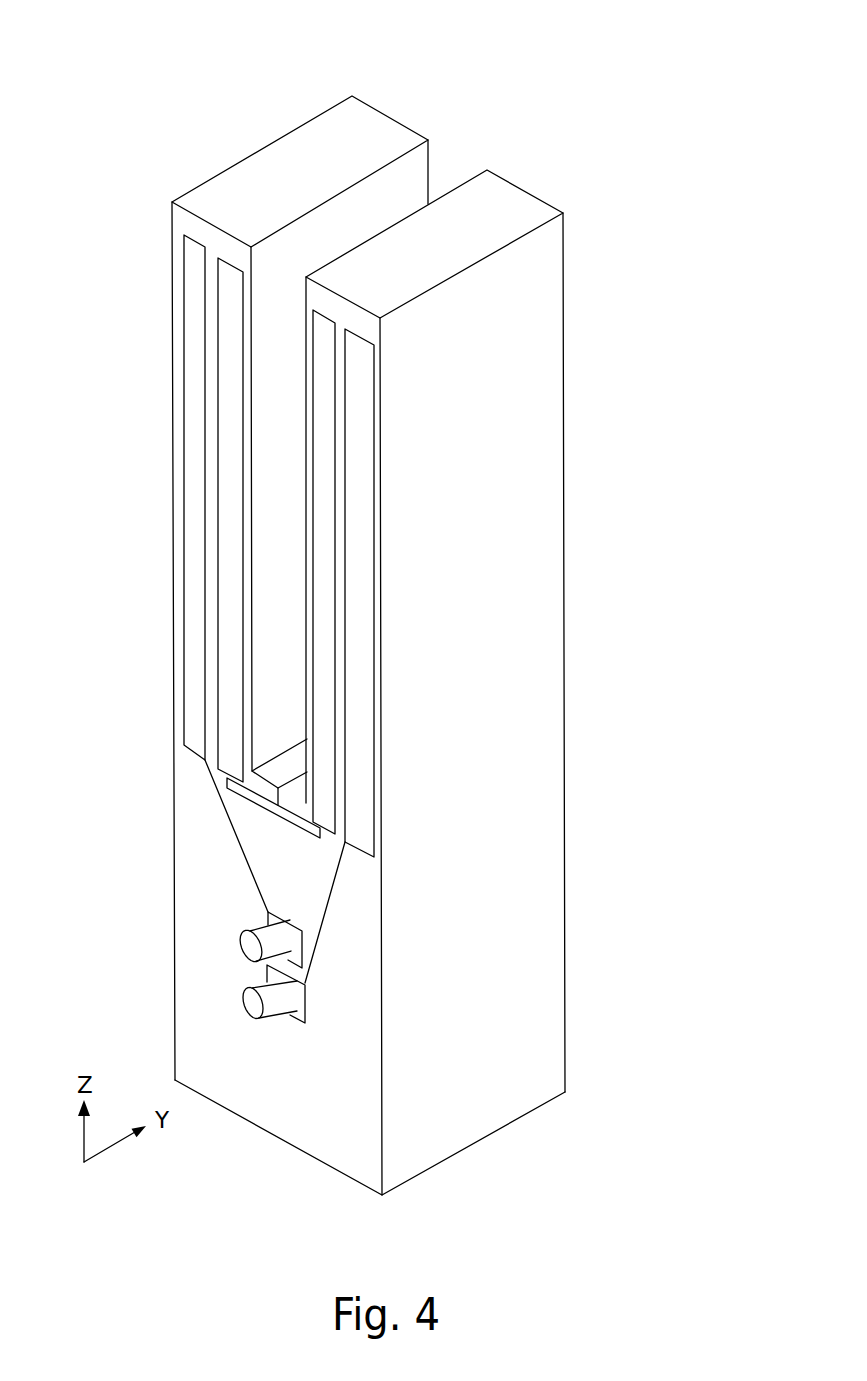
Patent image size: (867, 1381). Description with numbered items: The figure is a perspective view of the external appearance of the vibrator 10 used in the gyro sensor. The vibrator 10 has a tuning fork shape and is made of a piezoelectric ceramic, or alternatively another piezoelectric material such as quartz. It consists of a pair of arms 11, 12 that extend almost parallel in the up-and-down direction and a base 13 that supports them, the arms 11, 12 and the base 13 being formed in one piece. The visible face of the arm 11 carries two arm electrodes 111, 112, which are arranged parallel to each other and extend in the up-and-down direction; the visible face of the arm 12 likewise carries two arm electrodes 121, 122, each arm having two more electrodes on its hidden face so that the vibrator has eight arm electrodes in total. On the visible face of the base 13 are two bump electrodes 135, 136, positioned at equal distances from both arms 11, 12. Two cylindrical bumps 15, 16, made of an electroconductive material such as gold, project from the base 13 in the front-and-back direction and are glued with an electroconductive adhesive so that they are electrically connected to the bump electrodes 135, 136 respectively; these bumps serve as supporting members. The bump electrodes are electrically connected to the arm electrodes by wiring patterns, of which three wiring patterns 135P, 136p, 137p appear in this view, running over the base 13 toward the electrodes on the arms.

The vibrator 10 is at (144, 76).
The arm 11 is at (328, 140).
The arm 12 is at (480, 208).
The base 13 is at (192, 823).
The bump 15 is at (265, 924).
The bump 16 is at (278, 1020).
The arm electrode 111 is at (192, 277).
The arm electrode 112 is at (228, 333).
The arm electrode 121 is at (327, 367).
The arm electrode 122 is at (357, 425).
The bump electrode 135 is at (292, 930).
The wiring pattern 135P is at (213, 782).
The bump electrode 136 is at (298, 1018).
The wiring pattern 136p is at (325, 920).
The wiring pattern 137p is at (254, 808).